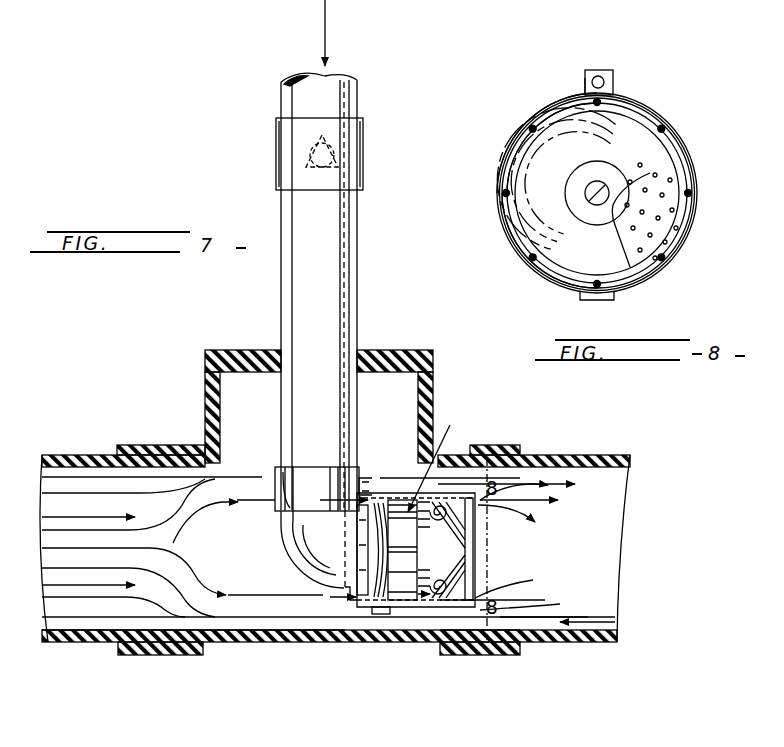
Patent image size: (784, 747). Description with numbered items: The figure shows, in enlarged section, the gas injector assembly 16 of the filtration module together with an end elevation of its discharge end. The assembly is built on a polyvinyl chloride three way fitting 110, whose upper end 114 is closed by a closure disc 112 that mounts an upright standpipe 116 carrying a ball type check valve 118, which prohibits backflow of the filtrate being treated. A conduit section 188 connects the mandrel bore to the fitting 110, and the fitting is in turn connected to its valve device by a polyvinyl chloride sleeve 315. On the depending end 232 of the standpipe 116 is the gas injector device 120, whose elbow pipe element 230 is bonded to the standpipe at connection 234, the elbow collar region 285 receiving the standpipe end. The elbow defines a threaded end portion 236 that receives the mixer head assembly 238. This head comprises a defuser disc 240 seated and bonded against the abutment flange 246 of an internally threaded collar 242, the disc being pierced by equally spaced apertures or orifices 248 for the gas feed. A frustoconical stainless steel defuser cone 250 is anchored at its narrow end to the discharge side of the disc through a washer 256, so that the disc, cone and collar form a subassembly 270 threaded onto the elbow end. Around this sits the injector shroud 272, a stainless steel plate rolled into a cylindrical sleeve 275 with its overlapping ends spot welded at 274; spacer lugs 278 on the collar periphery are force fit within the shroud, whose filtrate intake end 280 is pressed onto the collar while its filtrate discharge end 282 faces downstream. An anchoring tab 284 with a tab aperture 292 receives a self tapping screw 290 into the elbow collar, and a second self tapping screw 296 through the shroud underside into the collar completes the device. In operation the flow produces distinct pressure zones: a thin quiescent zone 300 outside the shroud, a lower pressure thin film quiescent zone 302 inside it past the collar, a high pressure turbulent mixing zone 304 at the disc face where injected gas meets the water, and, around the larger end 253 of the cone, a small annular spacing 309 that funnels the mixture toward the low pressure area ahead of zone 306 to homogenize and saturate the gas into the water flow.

In FIG. 7, the gas injector assembly 16 is at (322, 645).
In FIG. 7, the three way fitting 110 is at (436, 382).
In FIG. 7, the closure disc 112 is at (402, 348).
In FIG. 7, the fitting upper end 114 is at (205, 375).
In FIG. 7, the standpipe 116 is at (345, 268).
In FIG. 7, the check valve 118 is at (356, 152).
In FIG. 7, the gas injector device 120 is at (312, 592).
In FIG. 7, the conduit section 188 is at (105, 455).
In FIG. 7, the elbow pipe element 230 is at (320, 540).
In FIG. 7, the depending end of standpipe 232 is at (343, 455).
In FIG. 7, the connection 234 is at (312, 478).
In FIG. 7, the threaded end portion 236 is at (379, 588).
In FIG. 7, the mixer head assembly 238 is at (446, 608).
In FIG. 8, the mixer head assembly 238 is at (684, 118).
In FIG. 8, the defuser disc 240 is at (660, 215).
In FIG. 8, the collar 242 is at (670, 243).
In FIG. 8, the abutment flange 246 is at (672, 188).
In FIG. 8, the apertures or orifices 248 is at (612, 227).
In FIG. 8, the defuser cone 250 is at (652, 163).
In FIG. 7, the larger end of defuser cone 253 is at (480, 563).
In FIG. 8, the washer 256 is at (608, 178).
In FIG. 7, the defuser disc, cone, and collar subassembly 270 is at (361, 256).
In FIG. 8, the injector shroud 272 is at (506, 160).
In FIG. 8, the spot weld 274 is at (602, 298).
In FIG. 8, the cylindrical sleeve 275 is at (510, 246).
In FIG. 8, the spacer lugs 278 is at (690, 193).
In FIG. 7, the filtrate intake end 280 is at (322, 594).
In FIG. 7, the filtrate discharge end 282 is at (474, 582).
In FIG. 8, the anchoring tab 284 is at (585, 75).
In FIG. 7, the collar flange 285 is at (285, 470).
In FIG. 7, the self tapping screw 290 is at (375, 490).
In FIG. 8, the tab aperture 292 is at (608, 78).
In FIG. 7, the self tapping screw 296 is at (392, 612).
In FIG. 7, the quiescent zone 300 is at (456, 614).
In FIG. 7, the quiescent zone 302 is at (384, 602).
In FIG. 7, the turbulent mixing zone 304 is at (440, 492).
In FIG. 7, the zone 306 is at (505, 492).
In FIG. 7, the annular spacing 309 is at (506, 488).
In FIG. 8, the annular spacing 309 is at (508, 220).
In FIG. 7, the polyvinyl chloride sleeve 315 is at (620, 456).